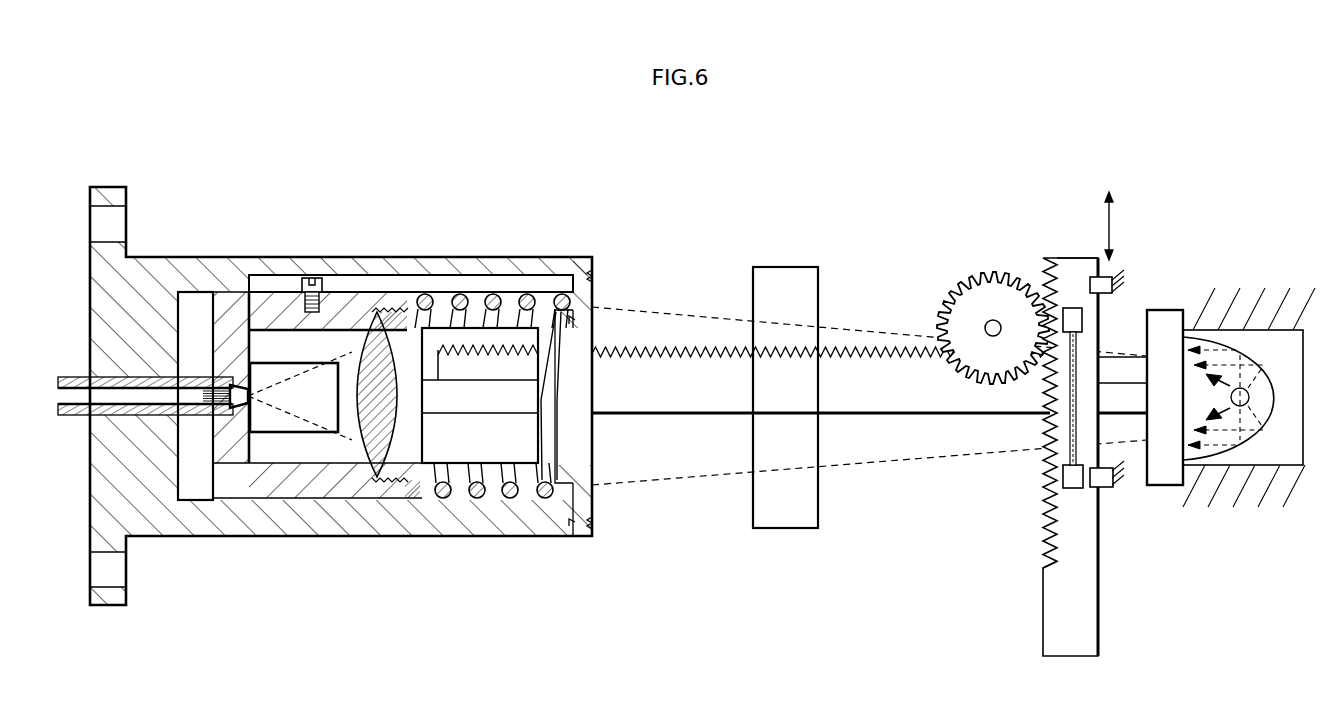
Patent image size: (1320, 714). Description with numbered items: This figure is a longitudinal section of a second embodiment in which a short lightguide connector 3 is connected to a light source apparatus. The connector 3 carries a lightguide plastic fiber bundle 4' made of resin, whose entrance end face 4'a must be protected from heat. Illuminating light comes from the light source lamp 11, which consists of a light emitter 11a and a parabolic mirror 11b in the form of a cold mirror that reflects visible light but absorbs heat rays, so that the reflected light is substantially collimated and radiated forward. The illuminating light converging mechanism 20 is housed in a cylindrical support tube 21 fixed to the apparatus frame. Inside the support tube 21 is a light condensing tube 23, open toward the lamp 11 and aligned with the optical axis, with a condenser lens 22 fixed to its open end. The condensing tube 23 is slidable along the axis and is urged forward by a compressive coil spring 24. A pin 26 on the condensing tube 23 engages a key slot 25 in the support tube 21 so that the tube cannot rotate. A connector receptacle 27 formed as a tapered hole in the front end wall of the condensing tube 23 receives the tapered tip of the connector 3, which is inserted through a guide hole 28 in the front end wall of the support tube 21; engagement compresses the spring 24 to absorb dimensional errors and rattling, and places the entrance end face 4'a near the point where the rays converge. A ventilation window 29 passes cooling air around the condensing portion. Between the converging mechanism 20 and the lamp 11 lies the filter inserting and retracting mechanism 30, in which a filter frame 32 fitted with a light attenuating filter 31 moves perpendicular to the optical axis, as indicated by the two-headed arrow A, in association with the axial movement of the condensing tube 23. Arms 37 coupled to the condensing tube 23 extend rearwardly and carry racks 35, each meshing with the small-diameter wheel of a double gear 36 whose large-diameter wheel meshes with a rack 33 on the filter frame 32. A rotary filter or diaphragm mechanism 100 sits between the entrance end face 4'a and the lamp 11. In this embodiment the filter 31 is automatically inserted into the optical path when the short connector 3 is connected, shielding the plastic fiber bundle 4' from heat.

The lightguide connector 3 is at (70, 418).
The lightguide plastic fiber bundle 4' is at (141, 368).
The entrance end face 4'a is at (300, 409).
The light source lamp 11 is at (1237, 466).
The light emitter 11a is at (1262, 395).
The parabolic mirror 11b is at (1232, 345).
The illuminating light converging mechanism 20 is at (441, 244).
The support tube 21 is at (292, 530).
The condenser lens 22 is at (363, 480).
The light condensing tube 23 is at (238, 494).
The compressive coil spring 24 is at (493, 294).
The key slot 25 is at (372, 284).
The pin 26 is at (314, 278).
The connector receptacle 27 is at (236, 382).
The guide hole 28 is at (124, 378).
The ventilation window 29 is at (284, 356).
The filter inserting and retracting mechanism 30 is at (1035, 250).
The light attenuating filter 31 is at (1069, 406).
The filter frame 32 is at (1110, 608).
The rack 33 is at (1042, 541).
The rack 35 is at (641, 414).
The double gear 36 is at (974, 288).
The arm 37 is at (483, 414).
The rotary filter or diaphragm mechanism 100 is at (783, 278).
The two-headed arrow A is at (1112, 228).